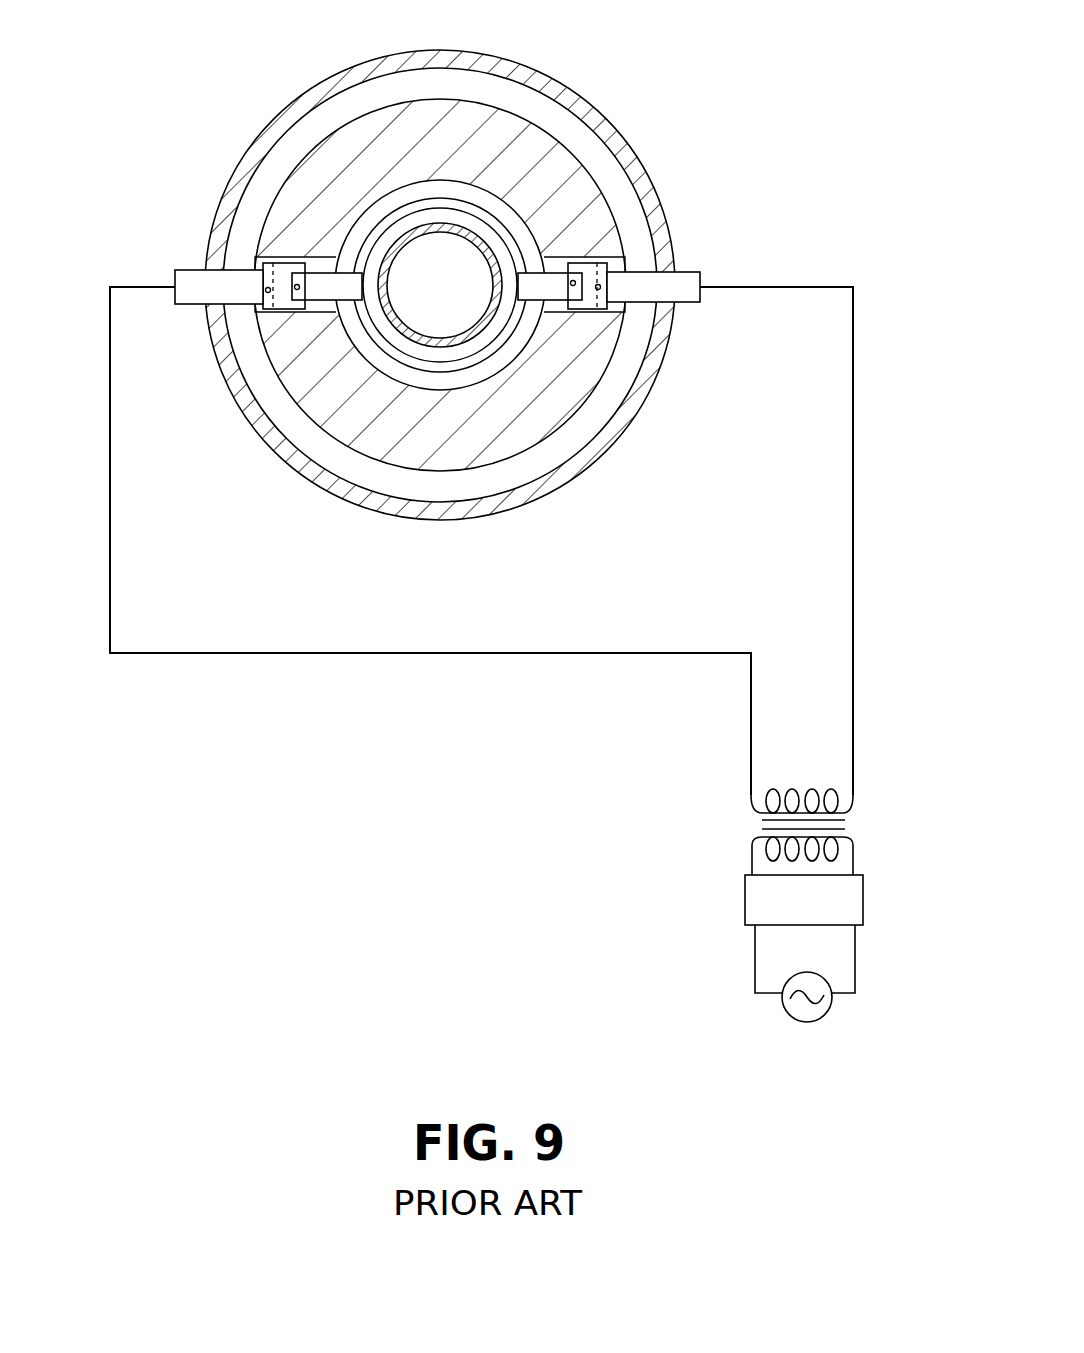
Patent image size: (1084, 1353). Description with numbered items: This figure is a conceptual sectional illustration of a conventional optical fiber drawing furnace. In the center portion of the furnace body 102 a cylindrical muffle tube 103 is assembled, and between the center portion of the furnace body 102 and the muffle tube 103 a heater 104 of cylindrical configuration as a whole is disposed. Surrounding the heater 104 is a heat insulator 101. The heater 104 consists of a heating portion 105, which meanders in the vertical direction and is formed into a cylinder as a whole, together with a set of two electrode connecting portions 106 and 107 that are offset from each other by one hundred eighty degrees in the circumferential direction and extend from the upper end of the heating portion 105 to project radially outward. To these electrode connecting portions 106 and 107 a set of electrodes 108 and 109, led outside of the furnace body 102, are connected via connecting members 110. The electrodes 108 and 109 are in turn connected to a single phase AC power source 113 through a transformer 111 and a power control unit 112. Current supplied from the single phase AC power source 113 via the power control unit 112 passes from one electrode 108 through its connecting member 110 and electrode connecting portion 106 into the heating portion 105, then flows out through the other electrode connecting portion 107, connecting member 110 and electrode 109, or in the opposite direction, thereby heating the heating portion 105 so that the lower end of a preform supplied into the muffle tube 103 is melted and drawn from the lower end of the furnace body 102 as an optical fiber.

The heat insulator 101 is at (392, 421).
The furnace body 102 is at (612, 122).
The muffle tube 103 is at (480, 235).
The heater 104 is at (358, 356).
The heating portion 105 is at (500, 350).
The electrode connecting portion 106 is at (553, 283).
The electrode connecting portion 107 is at (317, 278).
The electrode 108 is at (697, 293).
The electrode 109 is at (185, 282).
The connecting member 110 is at (590, 283).
The transformer 111 is at (866, 811).
The power control unit 112 is at (748, 902).
The single phase AC power source 113 is at (782, 1008).